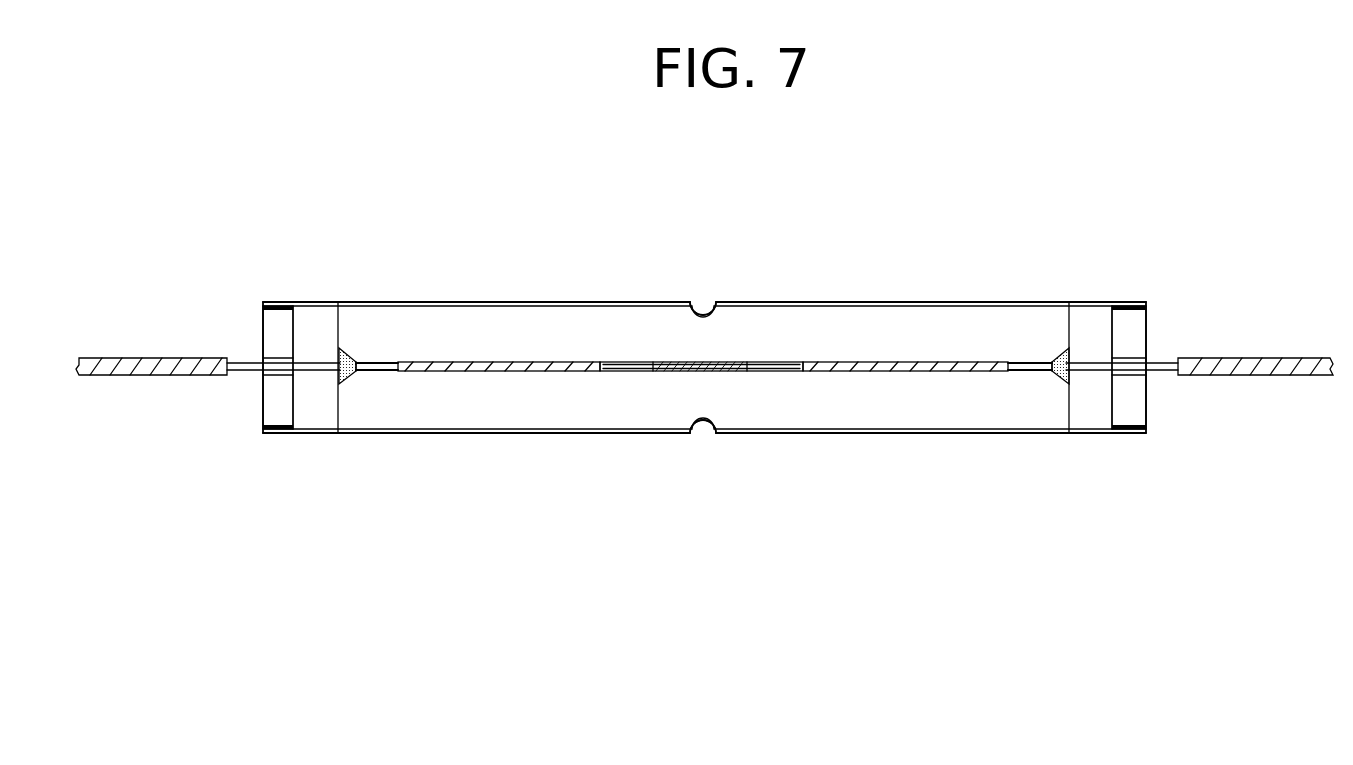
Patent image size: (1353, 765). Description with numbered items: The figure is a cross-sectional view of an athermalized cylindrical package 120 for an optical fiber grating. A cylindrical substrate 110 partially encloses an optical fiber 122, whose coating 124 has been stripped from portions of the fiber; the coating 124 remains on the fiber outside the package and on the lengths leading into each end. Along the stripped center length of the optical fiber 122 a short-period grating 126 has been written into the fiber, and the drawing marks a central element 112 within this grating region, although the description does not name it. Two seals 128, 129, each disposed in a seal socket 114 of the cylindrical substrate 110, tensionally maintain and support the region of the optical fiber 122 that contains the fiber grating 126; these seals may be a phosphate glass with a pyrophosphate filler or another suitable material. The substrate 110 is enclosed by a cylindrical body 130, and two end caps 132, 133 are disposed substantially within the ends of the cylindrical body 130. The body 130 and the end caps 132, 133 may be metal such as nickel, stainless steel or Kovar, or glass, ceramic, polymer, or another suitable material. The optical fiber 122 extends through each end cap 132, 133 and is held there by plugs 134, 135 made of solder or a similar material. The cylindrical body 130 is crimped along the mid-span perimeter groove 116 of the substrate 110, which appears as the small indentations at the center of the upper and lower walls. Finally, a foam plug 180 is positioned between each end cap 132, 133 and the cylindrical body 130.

The athermalized cylindrical package 120 is at (906, 213).
The cylindrical body 130 is at (890, 302).
The cylindrical substrate 110 is at (370, 412).
The mid-span perimeter groove 116 is at (708, 301).
The end cap 132 is at (275, 328).
The end cap 133 is at (1140, 328).
The foam plug 180 is at (315, 420).
The plug 134 is at (262, 377).
The plug 135 is at (1148, 374).
The coating 124 is at (110, 377).
The optical fiber 122 is at (237, 374).
The seal 128 is at (349, 350).
The seal 129 is at (1064, 347).
The seal socket 114 is at (353, 378).
The short-period grating 126 is at (682, 372).
The fuse element 112 is at (777, 372).